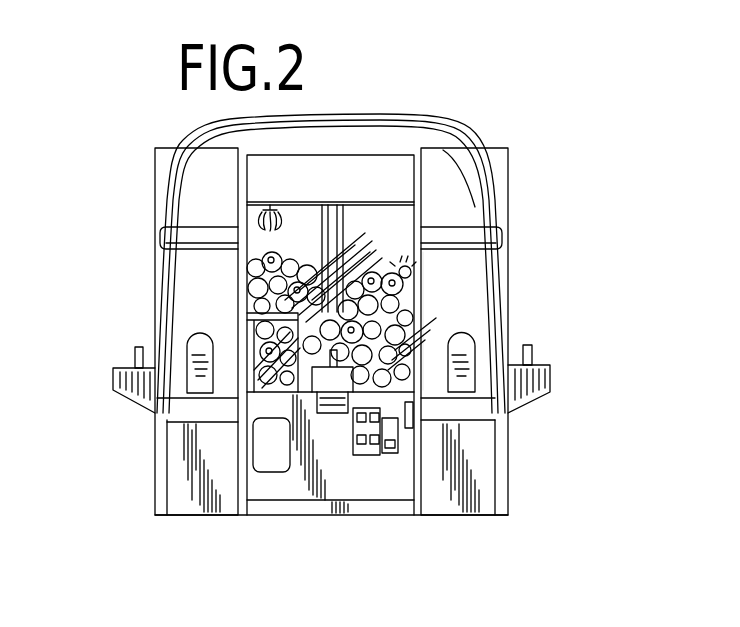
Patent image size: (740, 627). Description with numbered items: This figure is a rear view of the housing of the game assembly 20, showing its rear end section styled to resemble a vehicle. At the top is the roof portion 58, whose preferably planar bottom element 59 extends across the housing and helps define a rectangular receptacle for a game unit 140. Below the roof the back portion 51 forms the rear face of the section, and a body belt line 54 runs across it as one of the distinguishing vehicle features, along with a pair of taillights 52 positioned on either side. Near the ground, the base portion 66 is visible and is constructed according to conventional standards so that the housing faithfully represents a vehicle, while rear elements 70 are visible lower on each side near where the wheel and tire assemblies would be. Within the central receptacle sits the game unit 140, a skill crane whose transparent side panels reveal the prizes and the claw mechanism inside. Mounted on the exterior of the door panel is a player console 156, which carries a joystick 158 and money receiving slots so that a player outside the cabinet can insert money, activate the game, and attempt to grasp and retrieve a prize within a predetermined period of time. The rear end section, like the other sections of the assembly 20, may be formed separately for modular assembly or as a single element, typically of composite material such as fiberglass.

The game assembly 20 is at (466, 105).
The roof portion 58 is at (341, 114).
The bottom element of the roof 59 is at (386, 148).
The game unit 140 is at (152, 157).
The body belt line 54 is at (162, 234).
The back portion 51 is at (462, 268).
The taillights 52 is at (198, 343).
The joystick 158 is at (133, 357).
The player console 156 is at (133, 398).
The rear element 70 is at (222, 505).
The base portion 66 is at (489, 525).